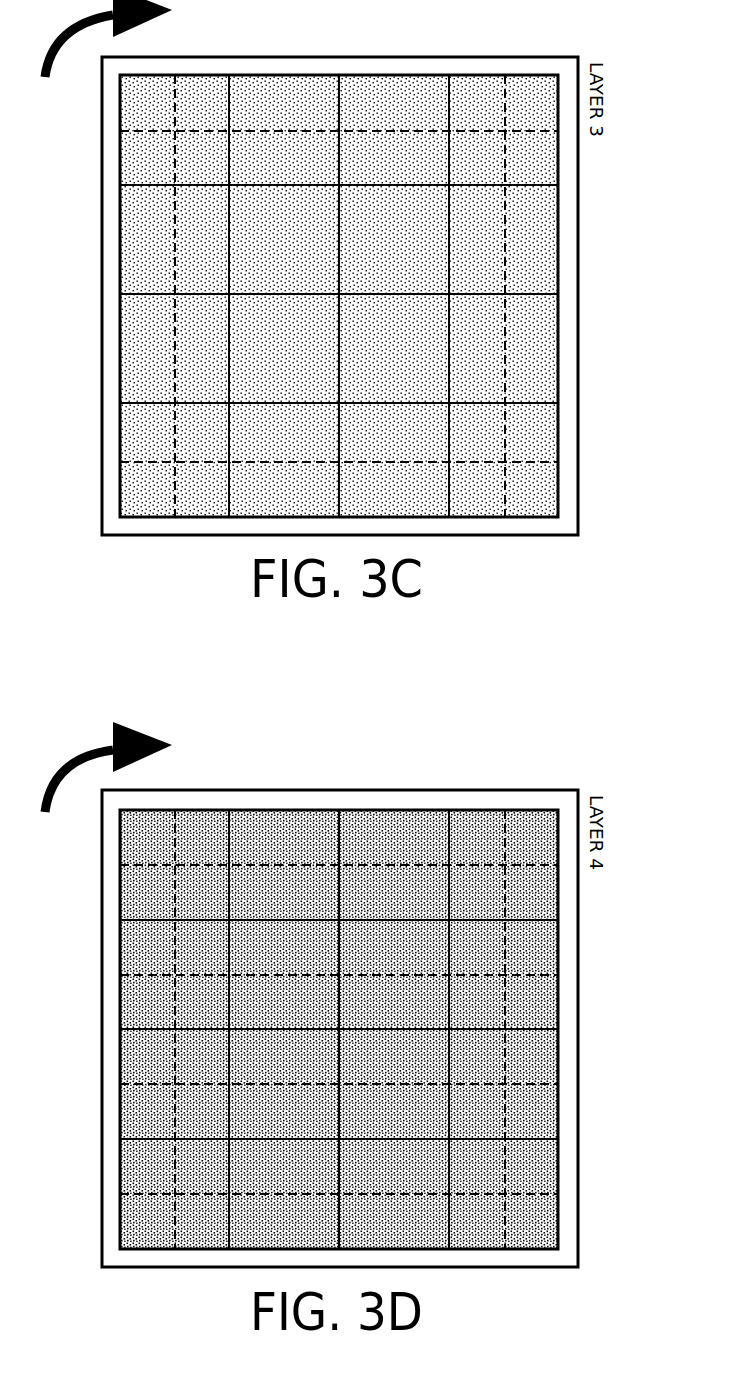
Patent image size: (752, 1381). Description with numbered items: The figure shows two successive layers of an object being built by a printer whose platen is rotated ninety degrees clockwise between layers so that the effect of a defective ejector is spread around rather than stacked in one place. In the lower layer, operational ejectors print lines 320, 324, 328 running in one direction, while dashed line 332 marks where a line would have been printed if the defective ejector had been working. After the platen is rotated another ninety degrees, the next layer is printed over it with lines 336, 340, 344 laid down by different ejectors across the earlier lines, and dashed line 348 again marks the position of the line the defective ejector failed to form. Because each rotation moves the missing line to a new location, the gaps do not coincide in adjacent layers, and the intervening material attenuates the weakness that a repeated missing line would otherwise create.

The line 320 is at (451, 115).
The line 324 is at (341, 115).
The line 328 is at (232, 152).
The dashed line 332 is at (182, 150).
The line 336 is at (397, 188).
The line 340 is at (528, 295).
The line 344 is at (393, 404).
The dashed line 348 is at (390, 462).